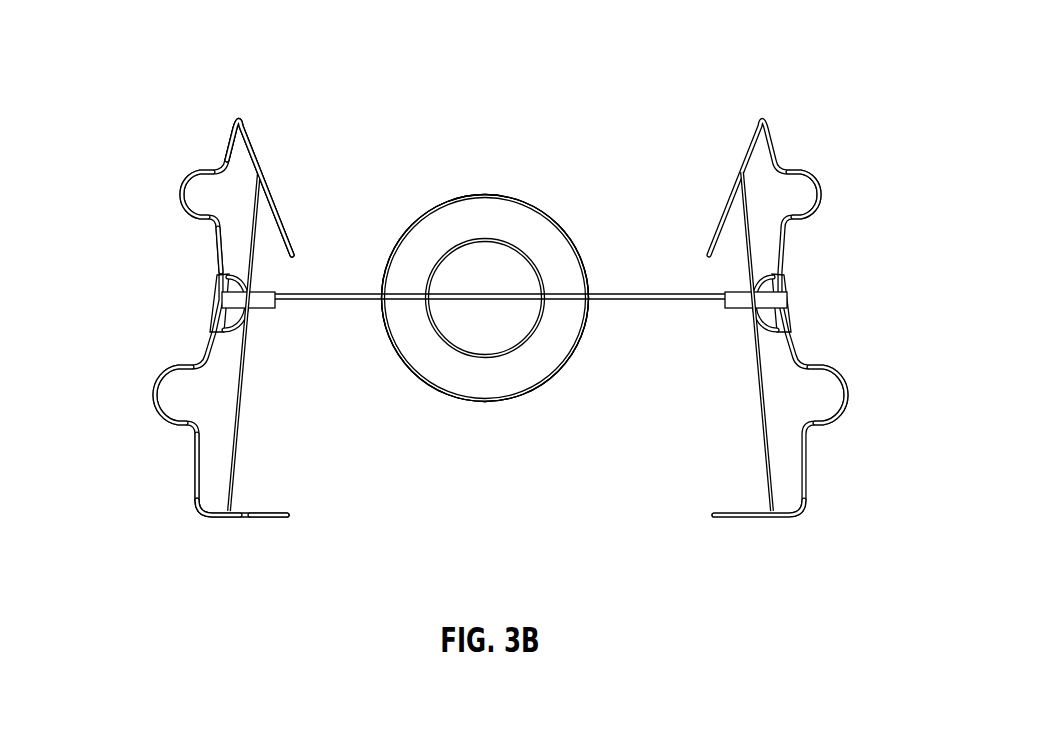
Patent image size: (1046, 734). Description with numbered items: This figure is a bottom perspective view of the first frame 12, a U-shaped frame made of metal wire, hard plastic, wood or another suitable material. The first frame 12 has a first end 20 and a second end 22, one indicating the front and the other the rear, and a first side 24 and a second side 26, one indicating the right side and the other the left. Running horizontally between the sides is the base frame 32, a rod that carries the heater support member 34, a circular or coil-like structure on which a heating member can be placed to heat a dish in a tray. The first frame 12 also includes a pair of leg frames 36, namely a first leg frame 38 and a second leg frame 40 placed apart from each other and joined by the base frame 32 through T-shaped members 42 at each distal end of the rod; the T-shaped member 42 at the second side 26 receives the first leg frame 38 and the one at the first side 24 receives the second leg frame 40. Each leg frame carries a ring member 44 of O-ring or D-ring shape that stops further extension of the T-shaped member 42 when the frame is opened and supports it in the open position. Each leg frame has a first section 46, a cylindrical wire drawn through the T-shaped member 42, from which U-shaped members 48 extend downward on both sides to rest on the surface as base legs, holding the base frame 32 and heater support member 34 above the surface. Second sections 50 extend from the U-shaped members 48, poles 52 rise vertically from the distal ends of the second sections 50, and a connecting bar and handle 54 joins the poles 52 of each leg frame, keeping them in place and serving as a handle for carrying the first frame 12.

The first frame 12 is at (126, 59).
The first end 20 is at (494, 501).
The second end 22 is at (496, 127).
The first side 24 is at (880, 281).
The second side 26 is at (137, 303).
The base frame 32 is at (630, 293).
The heater support member 34 is at (548, 212).
The leg frames 36 is at (221, 531).
The first leg frame 38 is at (188, 502).
The second leg frame 40 is at (783, 529).
The T-shaped member 42 is at (258, 297).
The ring member 44 is at (250, 283).
The first section 46 is at (218, 237).
The U-shaped members 48 is at (181, 188).
The second sections 50 is at (228, 146).
The poles 52 is at (263, 518).
The connecting bar and handle 54 is at (238, 435).